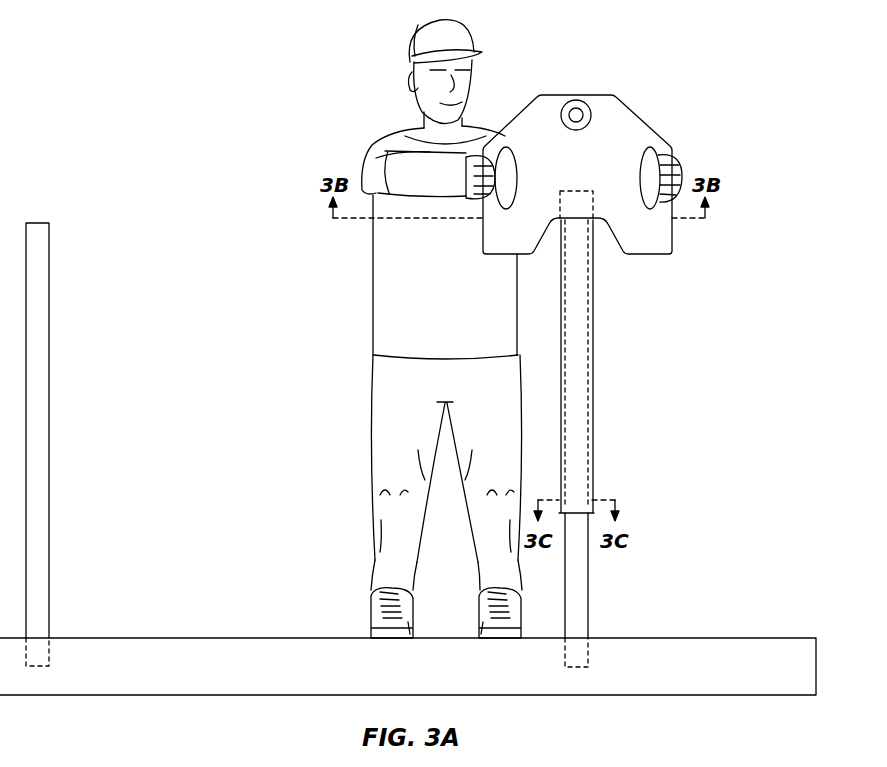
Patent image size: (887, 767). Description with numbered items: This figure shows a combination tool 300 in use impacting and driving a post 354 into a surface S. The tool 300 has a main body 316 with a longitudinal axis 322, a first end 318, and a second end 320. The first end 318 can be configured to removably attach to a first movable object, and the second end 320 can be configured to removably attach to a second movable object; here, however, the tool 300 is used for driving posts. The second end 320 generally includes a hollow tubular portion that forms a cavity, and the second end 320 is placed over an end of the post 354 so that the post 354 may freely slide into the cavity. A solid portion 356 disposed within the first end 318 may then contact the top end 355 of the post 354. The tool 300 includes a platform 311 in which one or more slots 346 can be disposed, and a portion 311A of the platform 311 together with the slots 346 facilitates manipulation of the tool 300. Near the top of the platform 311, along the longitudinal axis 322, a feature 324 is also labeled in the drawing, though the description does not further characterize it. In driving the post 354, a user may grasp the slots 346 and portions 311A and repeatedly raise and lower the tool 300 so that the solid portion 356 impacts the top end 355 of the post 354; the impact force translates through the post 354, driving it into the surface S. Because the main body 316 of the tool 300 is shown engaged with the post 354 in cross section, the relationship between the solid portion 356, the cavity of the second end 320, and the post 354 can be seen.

The combination tool 300 is at (408, 359).
The platform 311 is at (540, 100).
The portion of the platform 311A is at (398, 122).
The longitudinal axis 322 is at (577, 95).
The fastener 324 is at (587, 110).
The slot 346 is at (670, 147).
The first end 318 is at (537, 258).
The top end of the post 355 is at (36, 223).
The solid portion 356 is at (586, 238).
The main body 316 is at (594, 336).
The second end 320 is at (606, 458).
The post 354 is at (586, 610).
The surface S is at (681, 647).